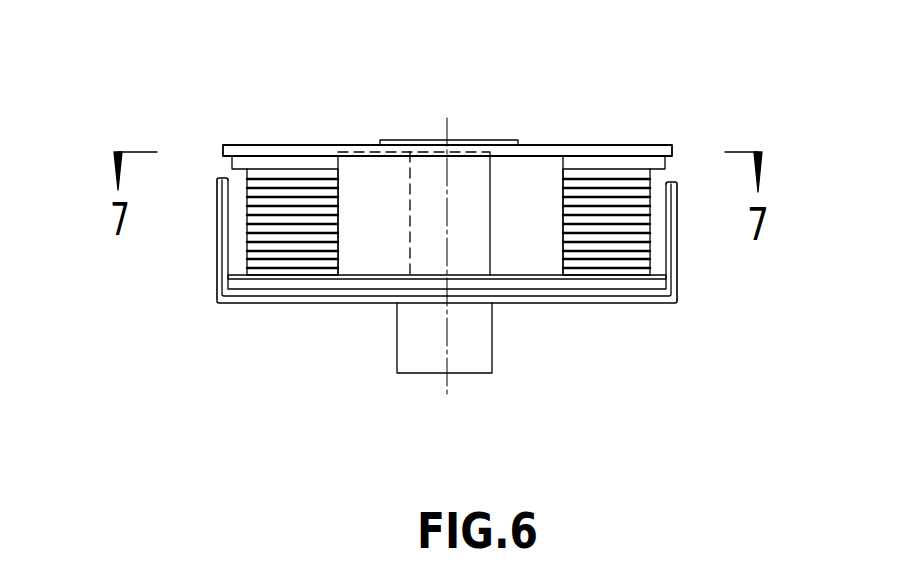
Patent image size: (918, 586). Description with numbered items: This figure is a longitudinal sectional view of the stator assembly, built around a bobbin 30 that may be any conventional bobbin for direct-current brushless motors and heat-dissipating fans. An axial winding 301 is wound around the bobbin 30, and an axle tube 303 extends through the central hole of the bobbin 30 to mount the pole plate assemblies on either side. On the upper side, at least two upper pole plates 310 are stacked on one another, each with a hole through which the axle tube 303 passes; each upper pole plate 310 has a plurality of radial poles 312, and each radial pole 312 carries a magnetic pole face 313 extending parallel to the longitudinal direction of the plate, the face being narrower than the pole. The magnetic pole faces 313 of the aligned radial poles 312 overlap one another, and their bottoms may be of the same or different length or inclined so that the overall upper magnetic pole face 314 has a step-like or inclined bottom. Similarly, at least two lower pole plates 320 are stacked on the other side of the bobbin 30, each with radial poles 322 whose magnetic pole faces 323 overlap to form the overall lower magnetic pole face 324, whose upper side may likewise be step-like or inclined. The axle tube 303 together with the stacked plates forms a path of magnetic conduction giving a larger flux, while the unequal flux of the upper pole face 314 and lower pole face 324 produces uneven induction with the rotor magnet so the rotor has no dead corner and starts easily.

The bobbin 30 is at (603, 285).
The axial winding 301 is at (626, 198).
The axle tube 303 is at (473, 355).
The upper pole plate 310 is at (287, 145).
The radial pole 312 is at (213, 147).
The magnetic pole face 313 is at (467, 183).
The overall upper magnetic pole face 314 is at (400, 163).
The lower pole plate 320 is at (320, 298).
The radial pole 322 is at (217, 302).
The magnetic pole face 323 is at (218, 270).
The overall lower magnetic pole face 324 is at (460, 222).